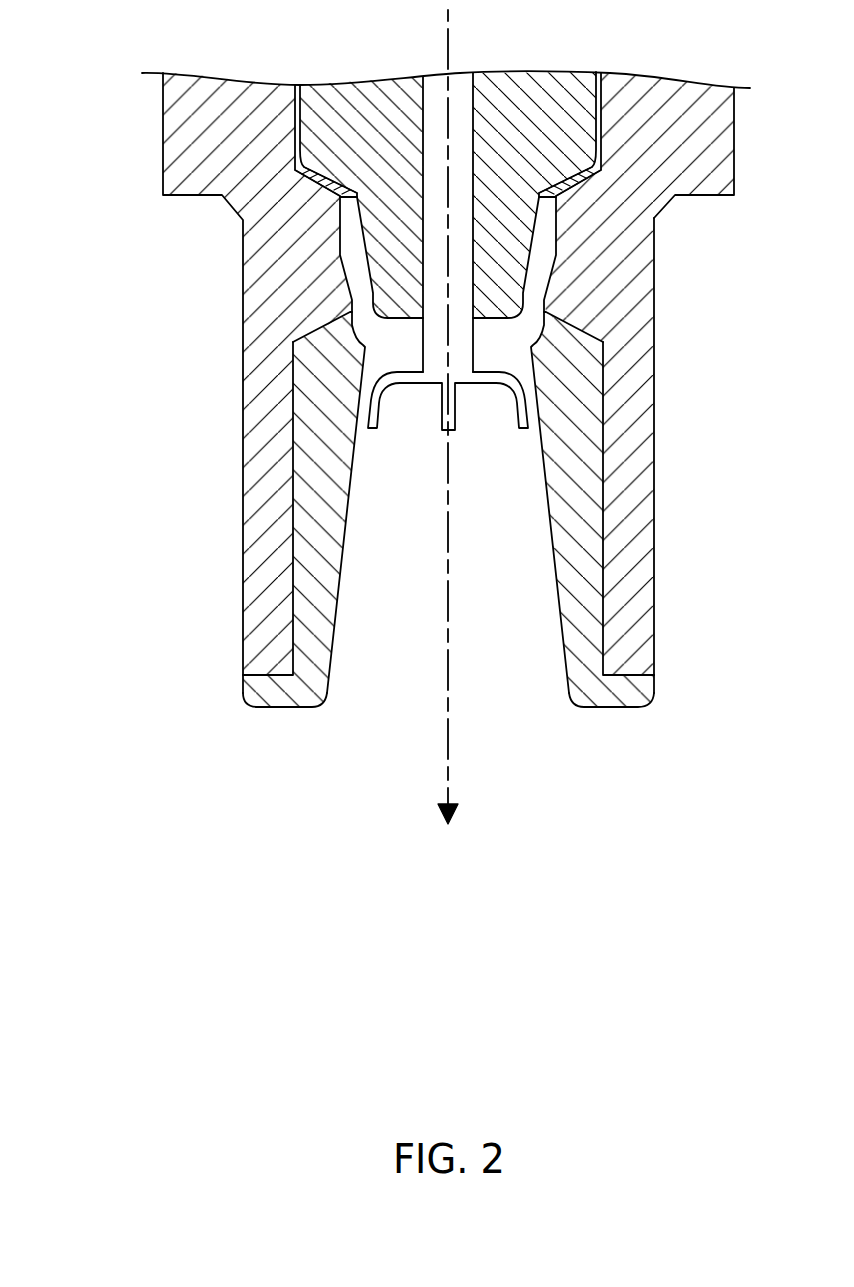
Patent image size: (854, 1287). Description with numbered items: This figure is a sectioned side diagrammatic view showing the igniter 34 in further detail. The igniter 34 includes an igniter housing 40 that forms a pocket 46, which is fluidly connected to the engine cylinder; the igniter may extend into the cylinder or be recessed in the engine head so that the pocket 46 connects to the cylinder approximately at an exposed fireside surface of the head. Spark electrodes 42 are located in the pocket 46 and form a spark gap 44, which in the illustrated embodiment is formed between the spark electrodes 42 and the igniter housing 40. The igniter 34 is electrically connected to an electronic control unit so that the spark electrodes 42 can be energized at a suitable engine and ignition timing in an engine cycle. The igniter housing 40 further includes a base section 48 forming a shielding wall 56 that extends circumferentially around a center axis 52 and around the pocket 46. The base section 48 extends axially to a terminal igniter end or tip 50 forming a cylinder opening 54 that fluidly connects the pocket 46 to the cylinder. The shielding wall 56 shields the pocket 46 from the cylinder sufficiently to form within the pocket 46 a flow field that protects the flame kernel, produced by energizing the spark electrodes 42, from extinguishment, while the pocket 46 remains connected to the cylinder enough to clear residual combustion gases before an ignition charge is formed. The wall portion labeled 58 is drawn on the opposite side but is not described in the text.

The igniter 34 is at (78, 83).
The igniter housing 40 is at (163, 152).
The spark electrodes 42 is at (372, 430).
The spark gap 44 is at (355, 433).
The pocket 46 is at (497, 566).
The base section 48 is at (654, 446).
The terminal igniter end or tip 50 is at (608, 709).
The center axis 52 is at (450, 752).
The cylinder opening 54 is at (321, 709).
The shielding wall 56 is at (622, 557).
The wedge 58 is at (333, 623).